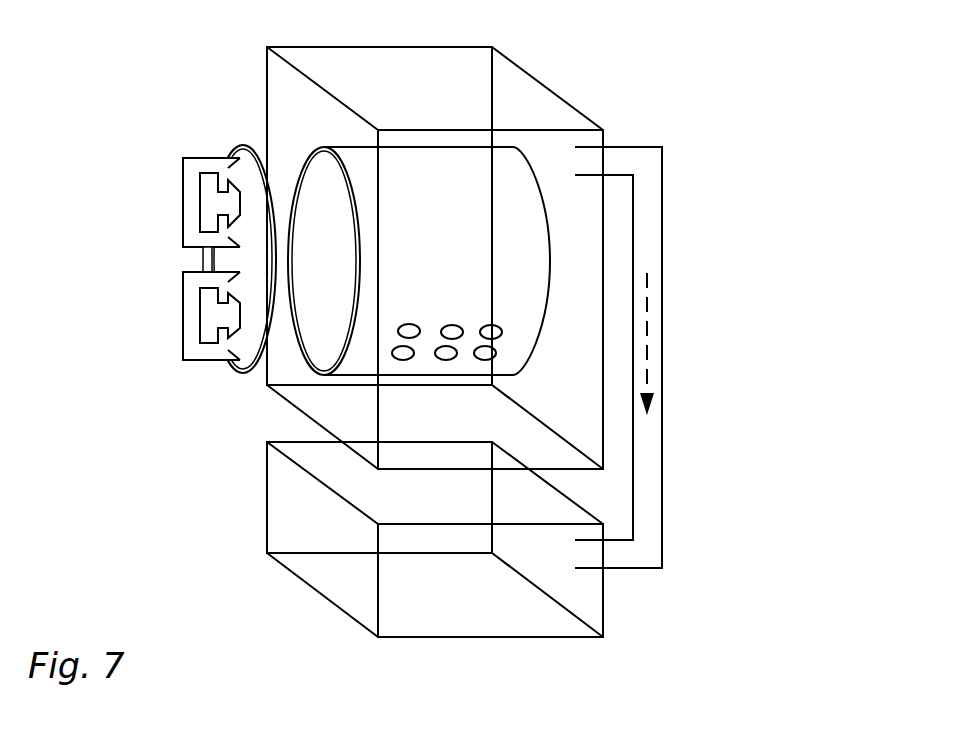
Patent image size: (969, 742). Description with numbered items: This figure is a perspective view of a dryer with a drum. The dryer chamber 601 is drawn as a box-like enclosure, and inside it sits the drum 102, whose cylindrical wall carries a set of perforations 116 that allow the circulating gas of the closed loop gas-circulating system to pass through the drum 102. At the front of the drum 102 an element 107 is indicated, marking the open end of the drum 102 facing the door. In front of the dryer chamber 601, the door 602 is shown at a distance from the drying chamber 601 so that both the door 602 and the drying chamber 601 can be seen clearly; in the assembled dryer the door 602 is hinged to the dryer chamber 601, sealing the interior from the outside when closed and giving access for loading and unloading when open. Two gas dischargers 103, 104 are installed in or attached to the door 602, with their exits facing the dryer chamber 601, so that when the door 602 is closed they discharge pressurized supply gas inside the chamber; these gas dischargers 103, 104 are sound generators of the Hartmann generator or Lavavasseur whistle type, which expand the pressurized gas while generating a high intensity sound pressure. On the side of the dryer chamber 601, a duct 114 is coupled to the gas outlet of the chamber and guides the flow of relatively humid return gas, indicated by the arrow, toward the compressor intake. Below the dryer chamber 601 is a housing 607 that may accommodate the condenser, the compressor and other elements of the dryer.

The dryer chamber 601 is at (549, 88).
The door 602 is at (235, 145).
The gas discharger 103 is at (183, 220).
The gas discharger 104 is at (183, 330).
The window 107 is at (323, 219).
The drum 102 is at (460, 270).
The perforations 116 is at (437, 315).
The duct 114 is at (663, 440).
The housing 607 is at (438, 637).